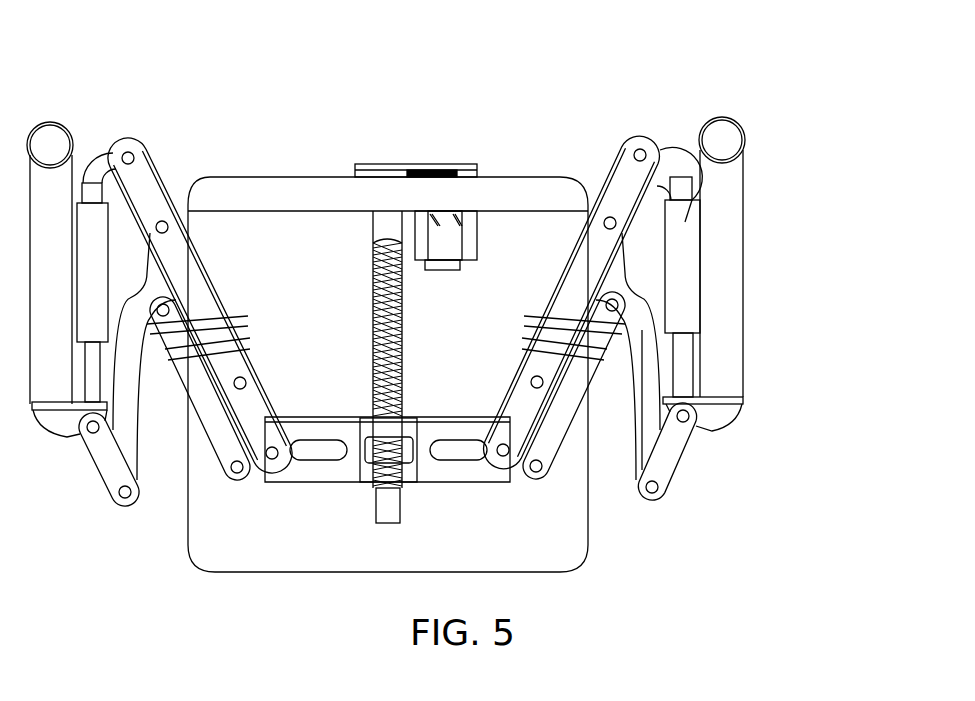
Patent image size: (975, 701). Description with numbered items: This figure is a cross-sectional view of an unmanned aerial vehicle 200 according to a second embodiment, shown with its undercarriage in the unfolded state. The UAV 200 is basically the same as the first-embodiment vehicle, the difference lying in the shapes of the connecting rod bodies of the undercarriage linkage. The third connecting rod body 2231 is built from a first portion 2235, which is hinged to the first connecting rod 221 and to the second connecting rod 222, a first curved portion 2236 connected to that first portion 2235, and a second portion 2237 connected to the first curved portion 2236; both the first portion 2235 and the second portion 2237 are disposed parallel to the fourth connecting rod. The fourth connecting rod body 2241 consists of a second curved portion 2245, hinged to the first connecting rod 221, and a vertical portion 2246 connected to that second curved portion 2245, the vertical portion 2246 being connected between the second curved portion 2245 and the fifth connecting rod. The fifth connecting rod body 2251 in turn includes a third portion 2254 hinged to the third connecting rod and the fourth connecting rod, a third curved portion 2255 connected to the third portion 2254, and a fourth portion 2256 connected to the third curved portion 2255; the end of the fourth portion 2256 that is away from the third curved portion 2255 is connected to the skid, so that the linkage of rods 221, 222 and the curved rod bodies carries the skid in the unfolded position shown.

The unmanned aerial vehicle 200 is at (423, 118).
The first connecting rod 221 is at (634, 148).
The second connecting rod 222 is at (566, 405).
The third connecting rod body 2231 is at (836, 232).
The first portion 2235 is at (625, 262).
The first curved portion 2236 is at (638, 308).
The second portion 2237 is at (652, 362).
The fourth connecting rod body 2241 is at (836, 88).
The second curved portion 2245 is at (665, 150).
The vertical portion 2246 is at (680, 185).
The fifth connecting rod body 2251 is at (853, 335).
The third portion 2254 is at (662, 476).
The third curved portion 2255 is at (713, 415).
The fourth portion 2256 is at (727, 363).